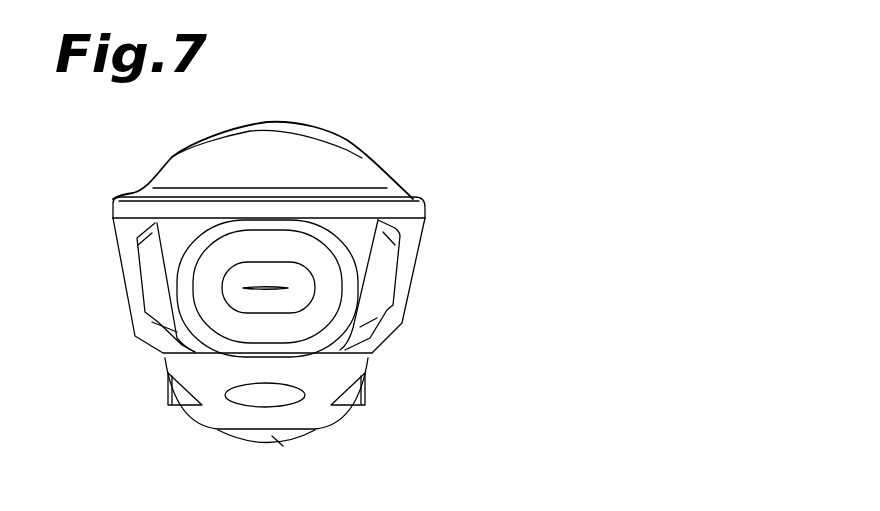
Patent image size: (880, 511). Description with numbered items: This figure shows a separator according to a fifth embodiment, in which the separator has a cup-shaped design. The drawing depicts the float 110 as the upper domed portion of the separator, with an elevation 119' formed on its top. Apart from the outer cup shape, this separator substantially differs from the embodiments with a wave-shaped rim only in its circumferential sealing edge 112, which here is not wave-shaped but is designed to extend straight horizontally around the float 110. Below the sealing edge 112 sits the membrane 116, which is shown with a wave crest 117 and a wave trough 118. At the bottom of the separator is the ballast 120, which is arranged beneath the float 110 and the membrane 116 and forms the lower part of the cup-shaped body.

The elevation 119' is at (331, 146).
The float 110 is at (364, 172).
The sealing edge 112 is at (425, 201).
The membrane 116 is at (338, 258).
The wave crest 117 is at (388, 287).
The wave trough 118 is at (322, 307).
The ballast 120 is at (335, 377).